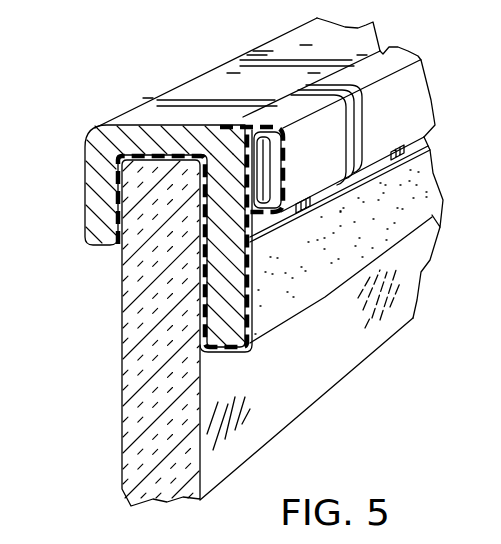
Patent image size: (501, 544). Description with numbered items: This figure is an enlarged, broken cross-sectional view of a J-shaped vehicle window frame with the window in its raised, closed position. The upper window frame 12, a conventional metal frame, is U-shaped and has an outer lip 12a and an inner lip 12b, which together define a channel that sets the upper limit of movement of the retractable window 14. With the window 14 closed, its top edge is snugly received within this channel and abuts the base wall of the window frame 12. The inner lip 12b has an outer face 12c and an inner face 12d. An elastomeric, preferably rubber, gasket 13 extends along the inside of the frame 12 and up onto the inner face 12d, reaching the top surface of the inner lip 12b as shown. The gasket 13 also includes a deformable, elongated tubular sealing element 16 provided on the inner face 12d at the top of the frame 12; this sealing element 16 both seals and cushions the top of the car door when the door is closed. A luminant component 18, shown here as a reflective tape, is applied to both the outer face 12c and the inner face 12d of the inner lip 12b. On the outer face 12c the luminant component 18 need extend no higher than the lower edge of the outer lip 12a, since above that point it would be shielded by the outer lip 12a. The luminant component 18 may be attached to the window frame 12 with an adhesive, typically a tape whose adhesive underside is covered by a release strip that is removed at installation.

The upper window frame 12 is at (344, 45).
The outer lip 12a is at (96, 186).
The inner lip 12b is at (221, 322).
The outer face 12c is at (205, 273).
The inner face 12d is at (238, 306).
The gasket 13 is at (167, 154).
The retractable window 14 is at (263, 373).
The sealing element 16 is at (402, 90).
The luminant component 18 is at (403, 167).